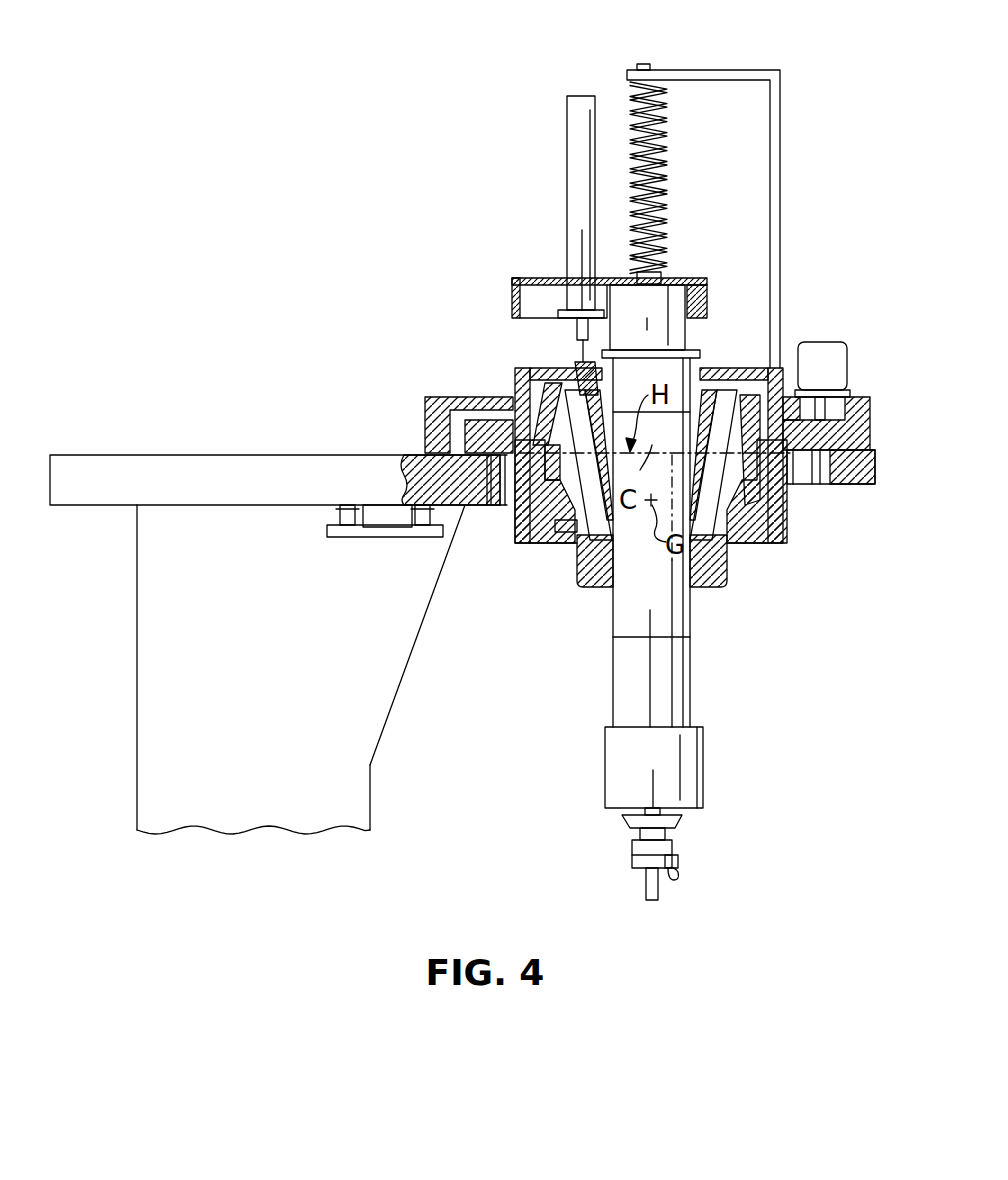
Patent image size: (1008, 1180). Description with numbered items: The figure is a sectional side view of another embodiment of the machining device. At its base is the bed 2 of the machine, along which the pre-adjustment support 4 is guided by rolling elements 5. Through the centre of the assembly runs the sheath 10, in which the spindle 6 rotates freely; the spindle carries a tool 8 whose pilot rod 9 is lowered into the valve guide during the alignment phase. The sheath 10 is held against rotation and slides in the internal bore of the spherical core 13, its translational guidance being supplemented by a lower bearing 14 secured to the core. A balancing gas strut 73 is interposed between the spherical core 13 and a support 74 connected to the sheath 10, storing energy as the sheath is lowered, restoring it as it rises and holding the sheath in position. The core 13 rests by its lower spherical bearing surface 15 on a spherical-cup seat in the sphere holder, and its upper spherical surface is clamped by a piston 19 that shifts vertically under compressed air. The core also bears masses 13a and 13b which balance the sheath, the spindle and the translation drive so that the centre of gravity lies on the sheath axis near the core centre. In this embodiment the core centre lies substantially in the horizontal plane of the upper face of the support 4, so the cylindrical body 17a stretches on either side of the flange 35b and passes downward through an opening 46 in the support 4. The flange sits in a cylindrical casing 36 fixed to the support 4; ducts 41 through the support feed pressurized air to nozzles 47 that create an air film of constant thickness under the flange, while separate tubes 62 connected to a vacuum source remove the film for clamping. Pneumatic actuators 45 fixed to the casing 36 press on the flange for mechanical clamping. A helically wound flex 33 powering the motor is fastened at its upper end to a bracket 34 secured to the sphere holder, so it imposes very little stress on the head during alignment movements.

The bed of the machine 2 is at (150, 678).
The pre-adjustment support 4 is at (178, 468).
The rolling elements 5 is at (383, 515).
The spindle 6 is at (650, 805).
The tool 8 is at (668, 850).
The pilot rod 9 is at (646, 884).
The sheath 10 is at (625, 705).
The spherical core 13 is at (735, 548).
The mass 13a is at (580, 365).
The mass 13b is at (553, 520).
The lower bearing 14 is at (710, 575).
The lower spherical bearing surface 15 is at (562, 548).
The cylindrical body 17a is at (518, 360).
The piston 19 is at (540, 398).
The flex 33 is at (668, 140).
The bracket 34 is at (693, 72).
The flange 35b is at (845, 460).
The cylindrical casing 36 is at (425, 425).
The ducts 41 is at (463, 510).
The pneumatic actuators 45 is at (822, 345).
The opening 46 is at (800, 488).
The nozzles 47 is at (425, 470).
The tubes 62 is at (516, 504).
The gas strut 73 is at (577, 135).
The support 74 is at (525, 278).